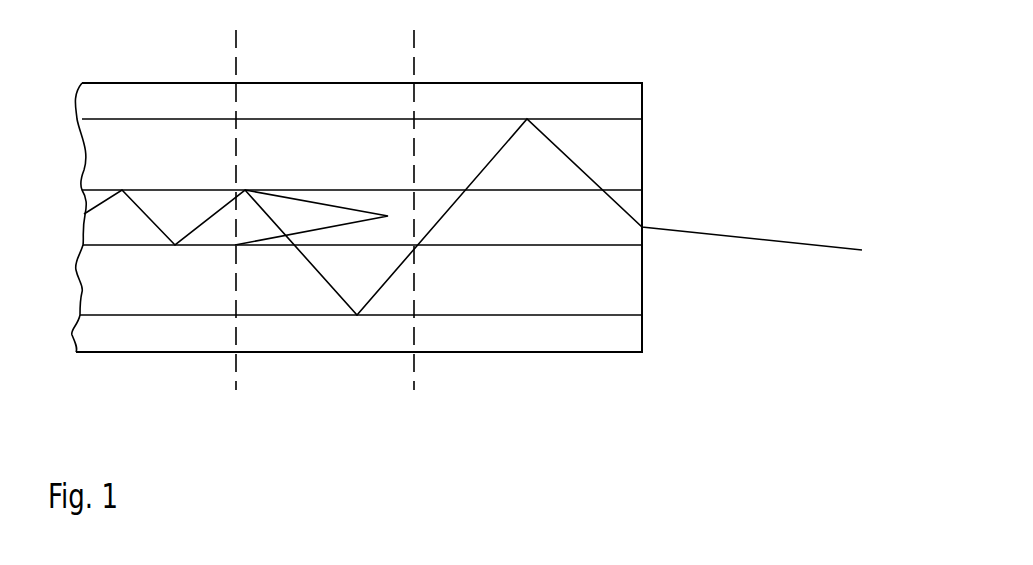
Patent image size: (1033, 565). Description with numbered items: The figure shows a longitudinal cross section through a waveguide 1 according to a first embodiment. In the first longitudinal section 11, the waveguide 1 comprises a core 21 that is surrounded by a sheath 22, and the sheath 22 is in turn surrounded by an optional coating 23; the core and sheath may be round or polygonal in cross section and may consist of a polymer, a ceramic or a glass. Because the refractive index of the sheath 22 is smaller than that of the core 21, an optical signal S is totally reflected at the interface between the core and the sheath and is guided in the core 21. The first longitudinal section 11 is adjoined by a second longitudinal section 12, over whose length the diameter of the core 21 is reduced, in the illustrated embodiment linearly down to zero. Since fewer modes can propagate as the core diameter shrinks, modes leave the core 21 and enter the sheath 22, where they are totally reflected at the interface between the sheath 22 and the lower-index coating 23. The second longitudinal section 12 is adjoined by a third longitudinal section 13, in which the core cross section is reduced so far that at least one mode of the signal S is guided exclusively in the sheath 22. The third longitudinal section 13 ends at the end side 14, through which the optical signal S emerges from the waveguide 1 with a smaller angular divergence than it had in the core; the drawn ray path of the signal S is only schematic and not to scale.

The waveguide 1 is at (683, 86).
The first longitudinal section 11 is at (135, 82).
The second longitudinal section 12 is at (312, 82).
The third longitudinal section 13 is at (503, 82).
The end side 14 is at (643, 203).
The core 21 is at (97, 207).
The sheath 22 is at (95, 293).
The coating 23 is at (120, 337).
The optical signal S is at (792, 243).